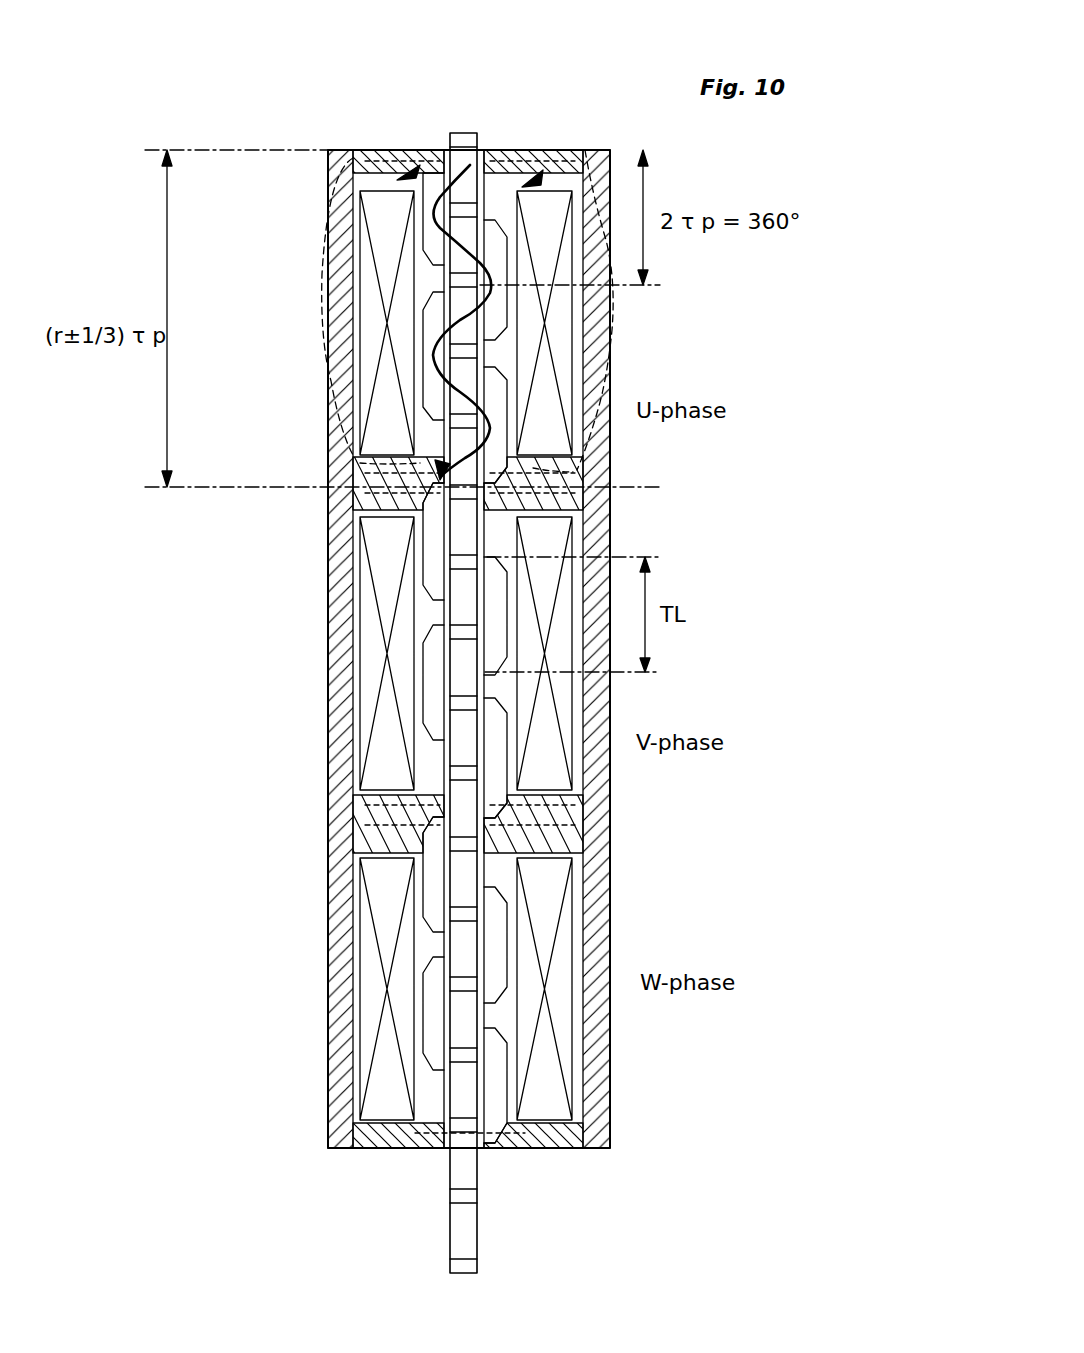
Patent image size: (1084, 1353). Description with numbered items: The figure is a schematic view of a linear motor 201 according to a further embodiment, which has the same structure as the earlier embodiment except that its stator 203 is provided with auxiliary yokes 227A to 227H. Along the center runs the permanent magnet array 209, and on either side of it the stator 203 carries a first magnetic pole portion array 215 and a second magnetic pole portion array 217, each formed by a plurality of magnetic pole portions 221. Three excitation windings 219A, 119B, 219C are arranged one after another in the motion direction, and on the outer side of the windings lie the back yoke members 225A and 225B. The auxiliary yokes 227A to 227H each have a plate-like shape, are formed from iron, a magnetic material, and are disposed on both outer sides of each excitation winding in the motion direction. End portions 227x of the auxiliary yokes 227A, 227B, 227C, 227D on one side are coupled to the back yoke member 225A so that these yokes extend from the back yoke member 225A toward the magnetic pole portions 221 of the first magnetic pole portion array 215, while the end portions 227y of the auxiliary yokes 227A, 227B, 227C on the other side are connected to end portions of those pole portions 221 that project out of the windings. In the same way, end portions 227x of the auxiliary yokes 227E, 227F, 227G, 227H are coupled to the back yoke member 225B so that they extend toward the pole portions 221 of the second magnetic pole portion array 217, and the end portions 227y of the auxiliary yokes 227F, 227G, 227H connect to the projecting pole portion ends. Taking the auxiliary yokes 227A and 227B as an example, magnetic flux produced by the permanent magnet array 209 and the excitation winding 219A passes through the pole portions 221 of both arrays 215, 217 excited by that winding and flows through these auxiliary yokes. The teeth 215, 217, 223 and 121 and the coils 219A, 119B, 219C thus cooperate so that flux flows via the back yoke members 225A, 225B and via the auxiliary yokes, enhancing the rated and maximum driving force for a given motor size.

The stator 203 is at (328, 142).
The linear motor 201 is at (483, 130).
The permanent magnet array 209 is at (490, 215).
The magnetic pole portion 221 is at (410, 172).
The first magnetic pole portion array 215 is at (430, 290).
The second magnetic pole portion array 217 is at (500, 362).
The stator teeth (V-phase) 223 is at (430, 748).
The stator teeth (W-phase) 121 is at (500, 1077).
The excitation winding 219A is at (375, 312).
The V-phase coil 119B is at (375, 612).
The excitation winding 219C is at (375, 942).
The back yoke member 225A is at (340, 408).
The back yoke member 225B is at (595, 365).
The auxiliary yoke 227A is at (408, 158).
The auxiliary yoke 227B is at (385, 498).
The auxiliary yoke 227C is at (385, 846).
The auxiliary yoke 227D is at (402, 1140).
The auxiliary yoke 227E is at (568, 155).
The auxiliary yoke 227F is at (585, 490).
The auxiliary yoke 227G is at (585, 828).
The auxiliary yoke 227H is at (540, 1140).
The end portion 227x is at (400, 163).
The end portion 227y is at (410, 172).